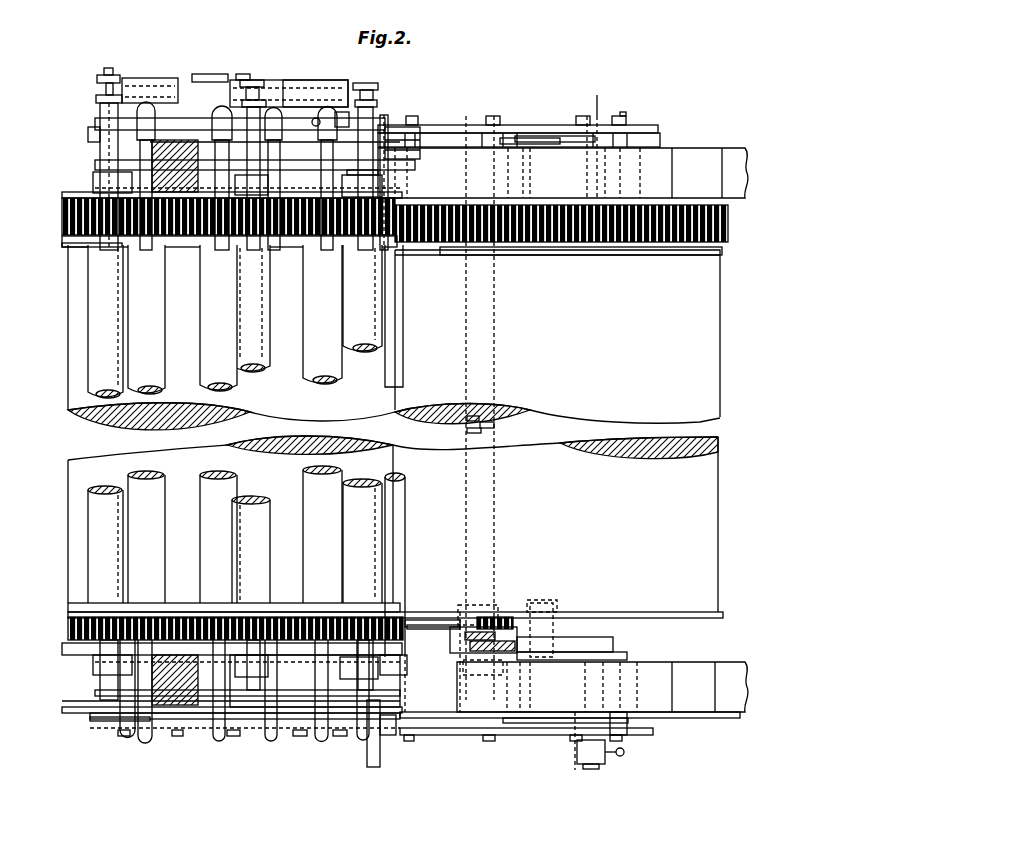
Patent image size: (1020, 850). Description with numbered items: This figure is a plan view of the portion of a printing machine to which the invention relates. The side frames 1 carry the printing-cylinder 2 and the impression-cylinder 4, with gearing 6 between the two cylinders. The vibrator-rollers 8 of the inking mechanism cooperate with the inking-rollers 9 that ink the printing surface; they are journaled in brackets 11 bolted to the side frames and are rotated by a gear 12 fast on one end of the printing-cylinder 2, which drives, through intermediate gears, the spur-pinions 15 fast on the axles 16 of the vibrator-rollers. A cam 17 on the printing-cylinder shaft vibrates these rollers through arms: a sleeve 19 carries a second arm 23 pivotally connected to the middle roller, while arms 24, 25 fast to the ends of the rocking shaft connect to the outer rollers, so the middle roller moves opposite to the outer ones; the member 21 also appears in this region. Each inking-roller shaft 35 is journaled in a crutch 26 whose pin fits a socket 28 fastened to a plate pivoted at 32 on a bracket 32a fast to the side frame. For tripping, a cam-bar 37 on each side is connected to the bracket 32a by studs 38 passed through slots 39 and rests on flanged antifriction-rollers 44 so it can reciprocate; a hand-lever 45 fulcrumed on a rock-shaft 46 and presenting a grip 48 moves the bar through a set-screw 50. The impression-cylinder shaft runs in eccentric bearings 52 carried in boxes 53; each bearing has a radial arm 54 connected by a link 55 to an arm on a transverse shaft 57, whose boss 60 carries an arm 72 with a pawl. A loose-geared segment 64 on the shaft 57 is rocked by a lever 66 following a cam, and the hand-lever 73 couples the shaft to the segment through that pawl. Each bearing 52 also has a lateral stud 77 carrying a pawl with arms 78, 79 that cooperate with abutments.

The side frames 1 is at (563, 414).
The printing-cylinder 2 is at (395, 431).
The impression-cylinder 4 is at (557, 333).
The gearing 6 is at (726, 218).
The vibrator-rollers 8 is at (235, 424).
The inking-rollers 9 is at (277, 466).
The brackets 11 is at (93, 183).
The gear 12 is at (68, 626).
The spur-pinions 15 is at (300, 620).
The axles 16 is at (100, 110).
The cam 17 is at (206, 74).
The sleeve 19 is at (285, 80).
The block 21 is at (305, 80).
The second arm 23 is at (243, 74).
The arm 24 is at (341, 112).
The arm 25 is at (112, 75).
The crutch 26 is at (215, 108).
The socket 28 is at (298, 730).
The pivot 32 is at (315, 681).
The bracket 32a is at (172, 248).
The shaft 35 is at (380, 115).
The cam-bar 37 is at (520, 125).
The studs 38 is at (712, 727).
The slots 39 is at (630, 722).
The flanged antifriction-rollers 44 is at (155, 730).
The hand-lever 45 is at (392, 736).
The rock-shaft 46 is at (405, 497).
The grip 48 is at (372, 768).
The set-screw 50 is at (413, 116).
The bearings 52 is at (610, 647).
The boxes 53 is at (505, 138).
The radial arm 54 is at (505, 632).
The link 55 is at (469, 640).
The transverse shaft 57 is at (496, 426).
The boss 60 is at (470, 617).
The loose-geared segment 64 is at (495, 641).
The lever 66 is at (430, 620).
The arm 72 is at (548, 612).
The hand-lever 73 is at (598, 765).
The lateral stud 77 is at (580, 768).
The pawl arm 78 is at (622, 116).
The pawl arm 79 is at (583, 116).